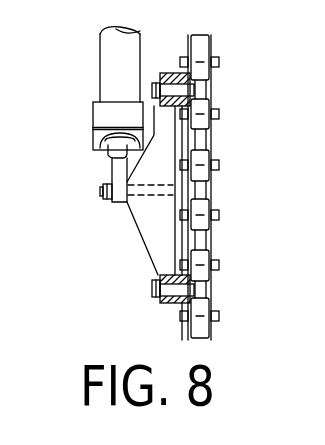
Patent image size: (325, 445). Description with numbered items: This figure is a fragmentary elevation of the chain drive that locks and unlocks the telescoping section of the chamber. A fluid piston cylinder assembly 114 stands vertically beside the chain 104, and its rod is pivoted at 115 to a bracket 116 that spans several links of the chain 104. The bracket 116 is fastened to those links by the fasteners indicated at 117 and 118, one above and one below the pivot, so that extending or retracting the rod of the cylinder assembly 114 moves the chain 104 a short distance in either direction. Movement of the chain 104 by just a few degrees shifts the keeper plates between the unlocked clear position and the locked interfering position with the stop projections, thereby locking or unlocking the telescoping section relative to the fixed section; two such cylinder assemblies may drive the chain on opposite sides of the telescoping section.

The chain 104 is at (220, 181).
The cylinder assembly 114 is at (112, 70).
The pivot 115 is at (102, 190).
The bracket 116 is at (152, 220).
The fastener 117 is at (165, 72).
The fastener 118 is at (160, 302).